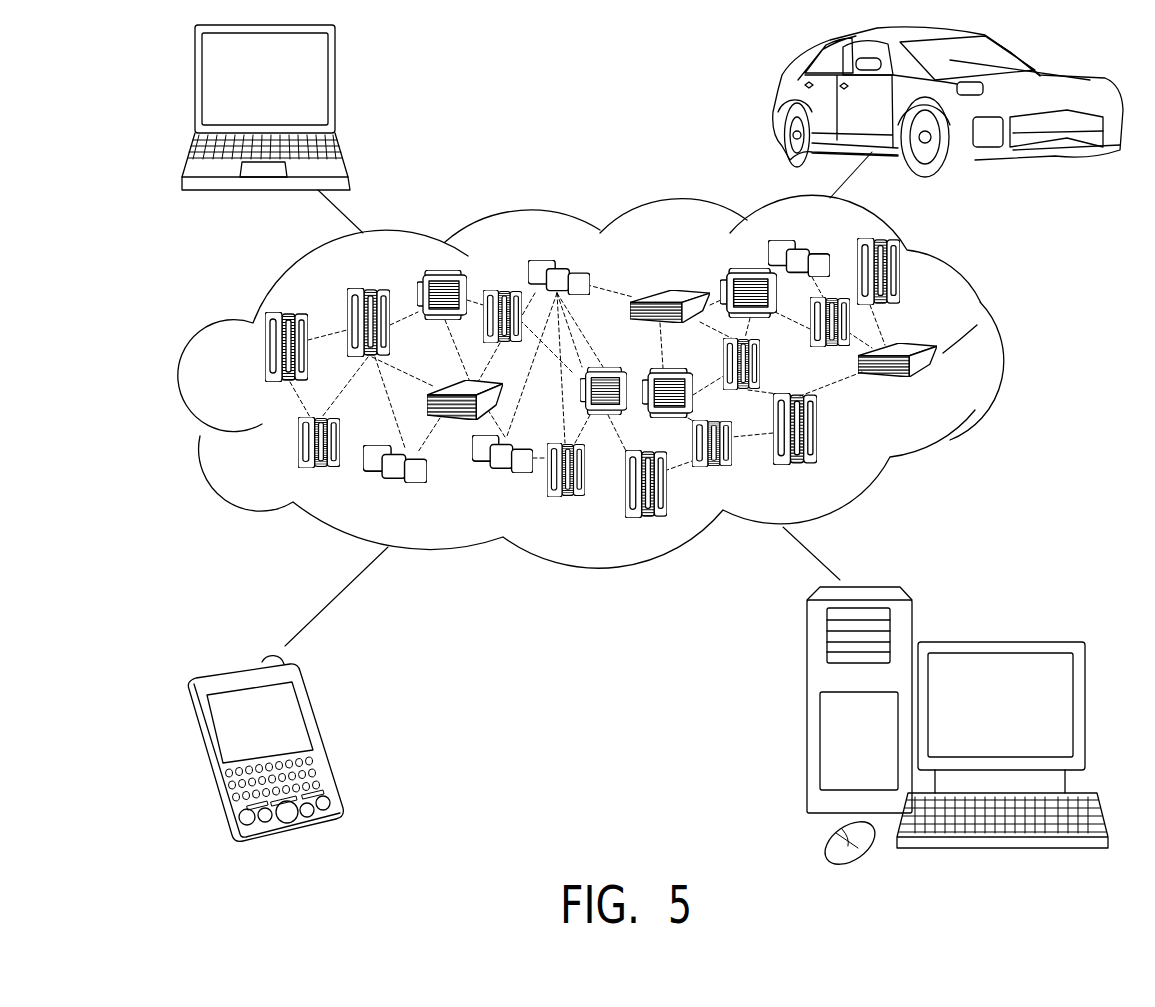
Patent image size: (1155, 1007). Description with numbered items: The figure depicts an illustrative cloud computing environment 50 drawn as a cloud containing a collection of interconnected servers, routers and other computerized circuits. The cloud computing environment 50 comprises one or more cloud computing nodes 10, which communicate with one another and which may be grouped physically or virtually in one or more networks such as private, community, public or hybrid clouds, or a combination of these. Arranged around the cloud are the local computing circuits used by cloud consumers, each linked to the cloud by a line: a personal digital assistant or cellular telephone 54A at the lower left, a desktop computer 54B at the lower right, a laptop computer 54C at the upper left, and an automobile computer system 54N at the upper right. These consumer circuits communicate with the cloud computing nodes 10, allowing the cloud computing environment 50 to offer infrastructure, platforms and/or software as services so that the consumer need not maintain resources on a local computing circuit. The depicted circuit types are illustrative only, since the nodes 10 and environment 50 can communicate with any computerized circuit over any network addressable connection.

The cloud computing node 10 is at (937, 387).
The cloud computing environment 50 is at (615, 381).
The personal digital assistant or cellular telephone 54A is at (323, 738).
The desktop computer 54B is at (997, 642).
The laptop computer 54C is at (334, 88).
The automobile computer system 54N is at (773, 102).